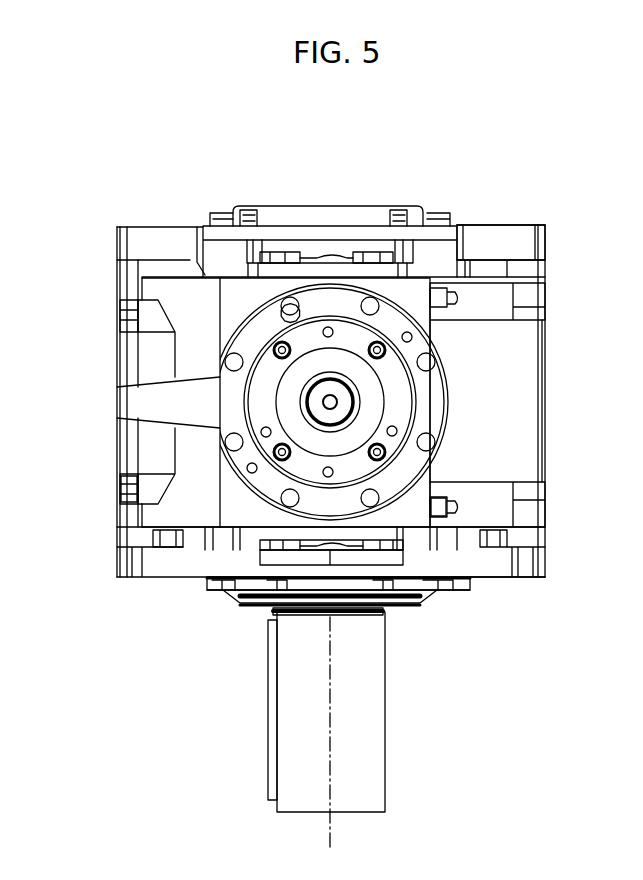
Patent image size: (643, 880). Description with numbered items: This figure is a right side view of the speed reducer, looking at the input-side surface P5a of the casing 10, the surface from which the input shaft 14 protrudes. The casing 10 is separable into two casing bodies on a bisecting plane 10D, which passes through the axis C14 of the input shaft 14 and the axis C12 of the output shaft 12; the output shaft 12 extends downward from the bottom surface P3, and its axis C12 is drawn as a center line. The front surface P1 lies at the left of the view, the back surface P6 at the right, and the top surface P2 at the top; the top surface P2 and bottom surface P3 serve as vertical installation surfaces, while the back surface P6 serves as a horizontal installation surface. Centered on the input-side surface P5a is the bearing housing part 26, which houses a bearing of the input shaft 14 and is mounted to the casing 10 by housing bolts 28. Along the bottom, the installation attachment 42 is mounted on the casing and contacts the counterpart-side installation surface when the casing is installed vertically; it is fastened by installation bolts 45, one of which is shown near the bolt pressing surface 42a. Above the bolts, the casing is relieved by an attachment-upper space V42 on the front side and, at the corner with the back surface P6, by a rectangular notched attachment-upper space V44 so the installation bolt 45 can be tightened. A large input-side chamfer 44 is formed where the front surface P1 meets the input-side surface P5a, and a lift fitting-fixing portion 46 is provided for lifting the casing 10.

The casing 10 is at (565, 143).
The bisecting plane 10D is at (332, 252).
The top surface P2 is at (492, 225).
The input-side chamfer 44 is at (202, 323).
The lift fitting-fixing portion 46 is at (152, 397).
The front surface P1 is at (112, 448).
The attachment-upper space V42 is at (158, 513).
The installation bolts 45 is at (158, 541).
The installation attachment 42 is at (168, 568).
The bearing housing part 26 is at (268, 482).
The housing bolts 28 is at (380, 314).
The input-side surface P5a is at (517, 410).
The input shaft 14 is at (355, 412).
The axis of the input shaft C14 is at (334, 394).
The back surface P6 is at (549, 458).
The attachment-upper space V44 is at (500, 515).
The lower flange of housing 42 42a is at (463, 548).
The bottom surface P3 is at (477, 584).
The output shaft 12 is at (372, 712).
The axis of the output shaft C12 is at (332, 833).